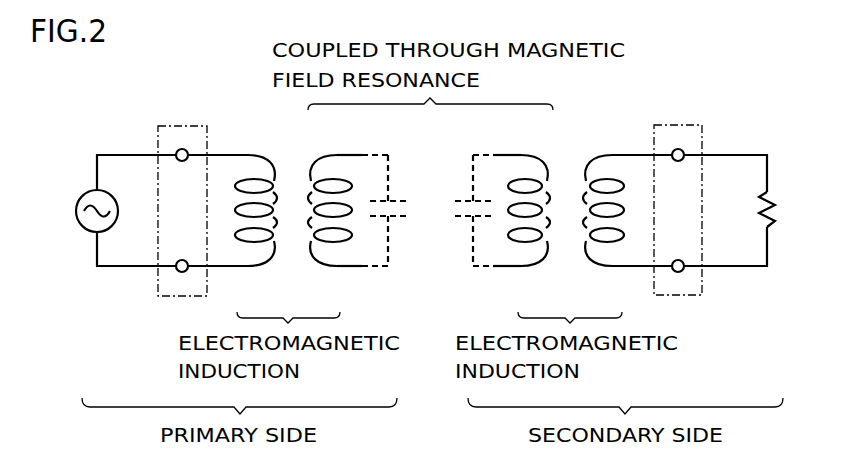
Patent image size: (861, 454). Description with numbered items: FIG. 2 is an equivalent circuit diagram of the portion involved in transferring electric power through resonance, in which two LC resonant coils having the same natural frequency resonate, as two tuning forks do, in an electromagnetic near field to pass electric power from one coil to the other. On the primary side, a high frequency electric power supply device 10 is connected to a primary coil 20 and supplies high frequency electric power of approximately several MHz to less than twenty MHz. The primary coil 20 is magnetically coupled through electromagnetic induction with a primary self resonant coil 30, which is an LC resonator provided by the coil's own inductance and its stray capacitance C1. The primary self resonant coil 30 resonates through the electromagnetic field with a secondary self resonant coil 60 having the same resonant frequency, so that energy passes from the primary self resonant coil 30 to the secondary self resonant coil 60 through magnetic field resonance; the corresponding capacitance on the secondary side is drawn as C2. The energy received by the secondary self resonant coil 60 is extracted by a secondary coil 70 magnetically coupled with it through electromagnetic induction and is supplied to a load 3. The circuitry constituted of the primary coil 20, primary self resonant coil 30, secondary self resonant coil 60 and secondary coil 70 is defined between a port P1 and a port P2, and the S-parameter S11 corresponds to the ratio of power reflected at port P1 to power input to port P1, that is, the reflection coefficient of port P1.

The high frequency electric power supply device 10 is at (75, 213).
The primary coil 20 is at (239, 153).
The primary self resonant coil 30 is at (333, 266).
The secondary self resonant coil 60 is at (530, 267).
The secondary coil 70 is at (620, 153).
The load 3 is at (778, 212).
The port P1 is at (181, 125).
The port P2 is at (678, 125).
The stray capacitance C1 is at (402, 200).
The secondary resonance capacitor C2 is at (462, 218).